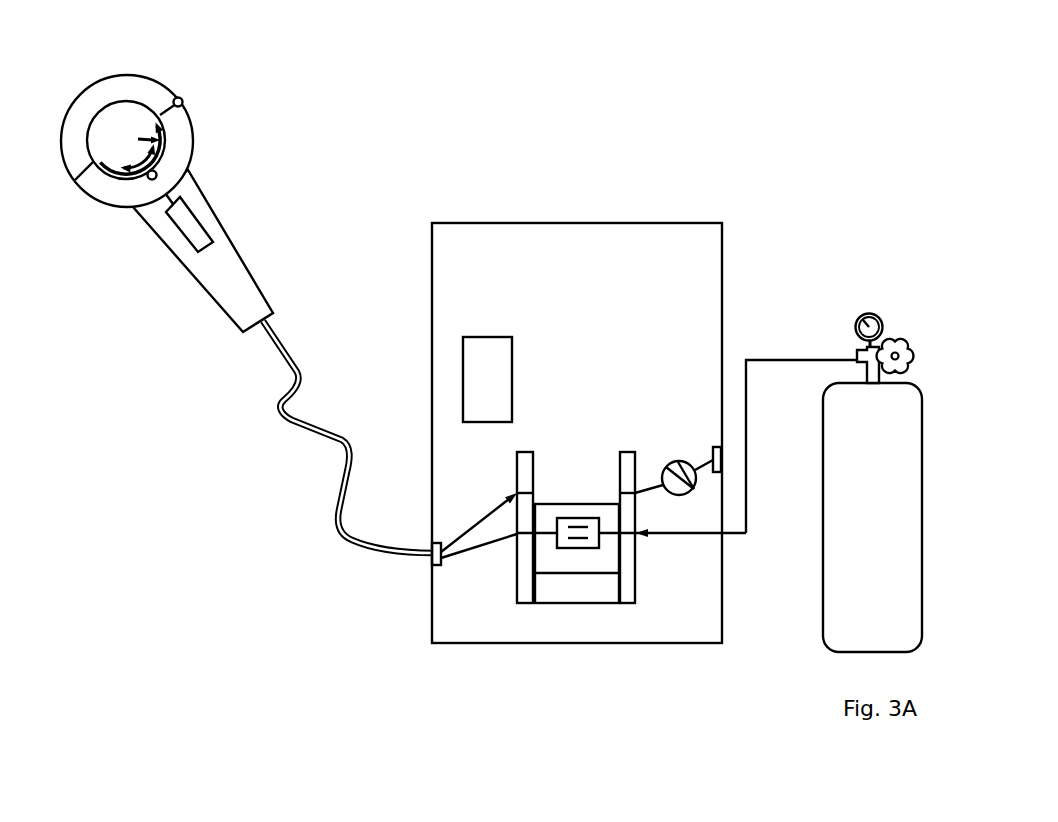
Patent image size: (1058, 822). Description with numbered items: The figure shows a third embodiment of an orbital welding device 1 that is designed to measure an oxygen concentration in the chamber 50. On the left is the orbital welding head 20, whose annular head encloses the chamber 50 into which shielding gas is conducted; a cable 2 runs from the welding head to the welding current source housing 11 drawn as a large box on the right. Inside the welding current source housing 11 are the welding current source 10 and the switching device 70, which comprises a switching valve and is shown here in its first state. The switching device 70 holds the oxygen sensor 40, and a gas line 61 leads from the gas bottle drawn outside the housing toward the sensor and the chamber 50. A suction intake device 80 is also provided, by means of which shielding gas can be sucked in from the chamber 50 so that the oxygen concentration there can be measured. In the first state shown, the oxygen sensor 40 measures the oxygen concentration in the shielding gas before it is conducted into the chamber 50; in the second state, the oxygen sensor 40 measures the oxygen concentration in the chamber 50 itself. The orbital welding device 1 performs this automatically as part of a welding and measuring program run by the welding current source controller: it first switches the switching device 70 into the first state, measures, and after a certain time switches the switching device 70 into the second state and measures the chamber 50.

The orbital welding device 1 is at (708, 137).
The cable 2 is at (283, 400).
The welding current source 10 is at (488, 336).
The welding current source housing 11 is at (488, 222).
The orbital welding head 20 is at (126, 255).
The oxygen sensor 40 is at (572, 518).
The chamber 50 is at (110, 125).
The gas line 61 is at (594, 534).
The switching device 70 is at (516, 624).
The suction intake device 80 is at (677, 460).